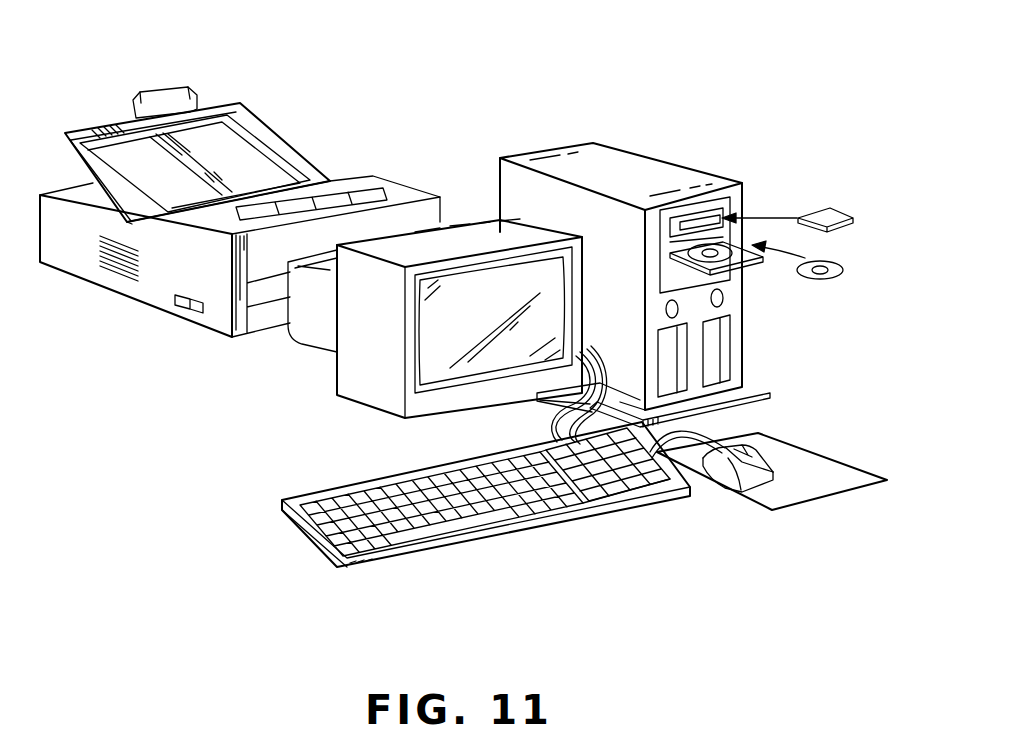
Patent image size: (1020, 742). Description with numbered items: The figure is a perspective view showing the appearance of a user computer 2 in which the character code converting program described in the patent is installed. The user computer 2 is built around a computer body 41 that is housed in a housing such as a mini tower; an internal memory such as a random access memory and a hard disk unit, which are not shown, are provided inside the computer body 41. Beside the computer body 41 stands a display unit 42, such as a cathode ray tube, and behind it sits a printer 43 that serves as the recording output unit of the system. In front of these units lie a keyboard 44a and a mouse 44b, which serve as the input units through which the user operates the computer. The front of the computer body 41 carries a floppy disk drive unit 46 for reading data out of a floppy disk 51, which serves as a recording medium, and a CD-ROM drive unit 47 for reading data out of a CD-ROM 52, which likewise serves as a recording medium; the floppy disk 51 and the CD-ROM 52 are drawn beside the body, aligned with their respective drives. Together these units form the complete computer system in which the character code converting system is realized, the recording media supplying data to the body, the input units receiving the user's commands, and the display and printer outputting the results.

The user computer 2 is at (516, 106).
The computer body 41 is at (638, 160).
The display unit 42 is at (352, 375).
The printer 43 is at (402, 190).
The keyboard 44a is at (490, 537).
The mouse 44b is at (756, 474).
The floppy disk drive unit 46 is at (700, 218).
The CD-ROM drive unit 47 is at (752, 263).
The floppy disk 51 is at (843, 216).
The CD-ROM 52 is at (843, 270).